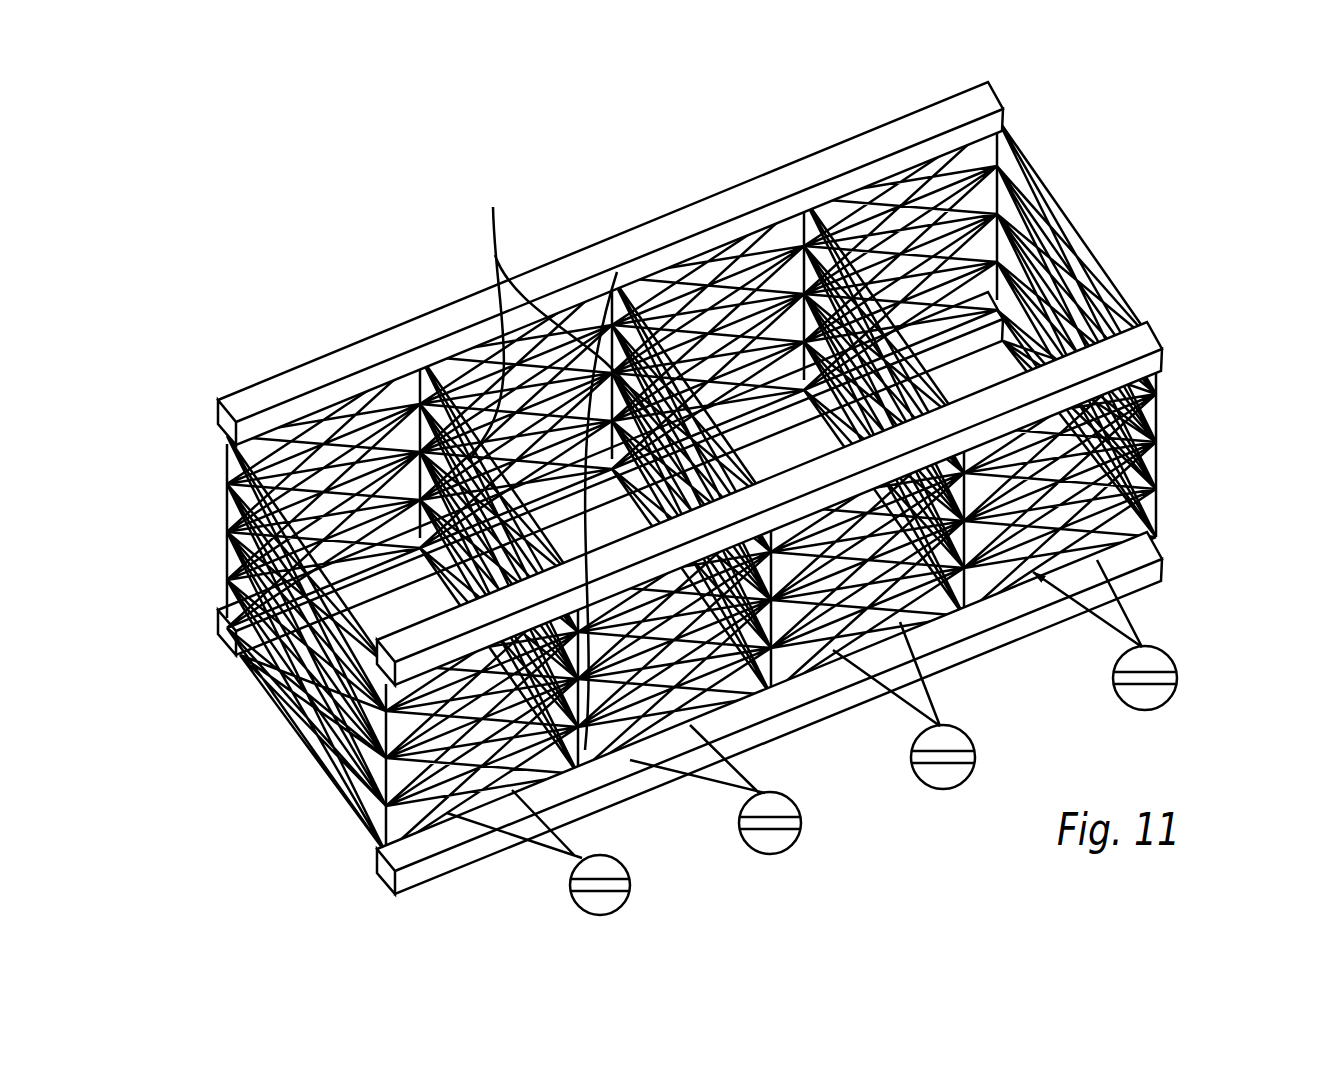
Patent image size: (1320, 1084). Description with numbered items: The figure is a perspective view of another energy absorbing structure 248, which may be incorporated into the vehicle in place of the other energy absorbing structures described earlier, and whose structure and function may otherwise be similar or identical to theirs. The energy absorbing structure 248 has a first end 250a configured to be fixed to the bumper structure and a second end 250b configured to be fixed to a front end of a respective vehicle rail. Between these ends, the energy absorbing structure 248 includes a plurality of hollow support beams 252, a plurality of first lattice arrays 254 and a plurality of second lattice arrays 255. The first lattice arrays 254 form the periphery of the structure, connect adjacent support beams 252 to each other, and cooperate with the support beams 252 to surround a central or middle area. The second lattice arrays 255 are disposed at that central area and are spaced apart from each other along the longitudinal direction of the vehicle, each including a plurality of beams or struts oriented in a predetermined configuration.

The energy absorbing structure 248 is at (701, 498).
The first end 250a is at (203, 553).
The second end 250b is at (1097, 238).
The hollow support beams 252 is at (388, 342).
The first lattice arrays 254 is at (681, 475).
The second lattice arrays 255 is at (1155, 158).